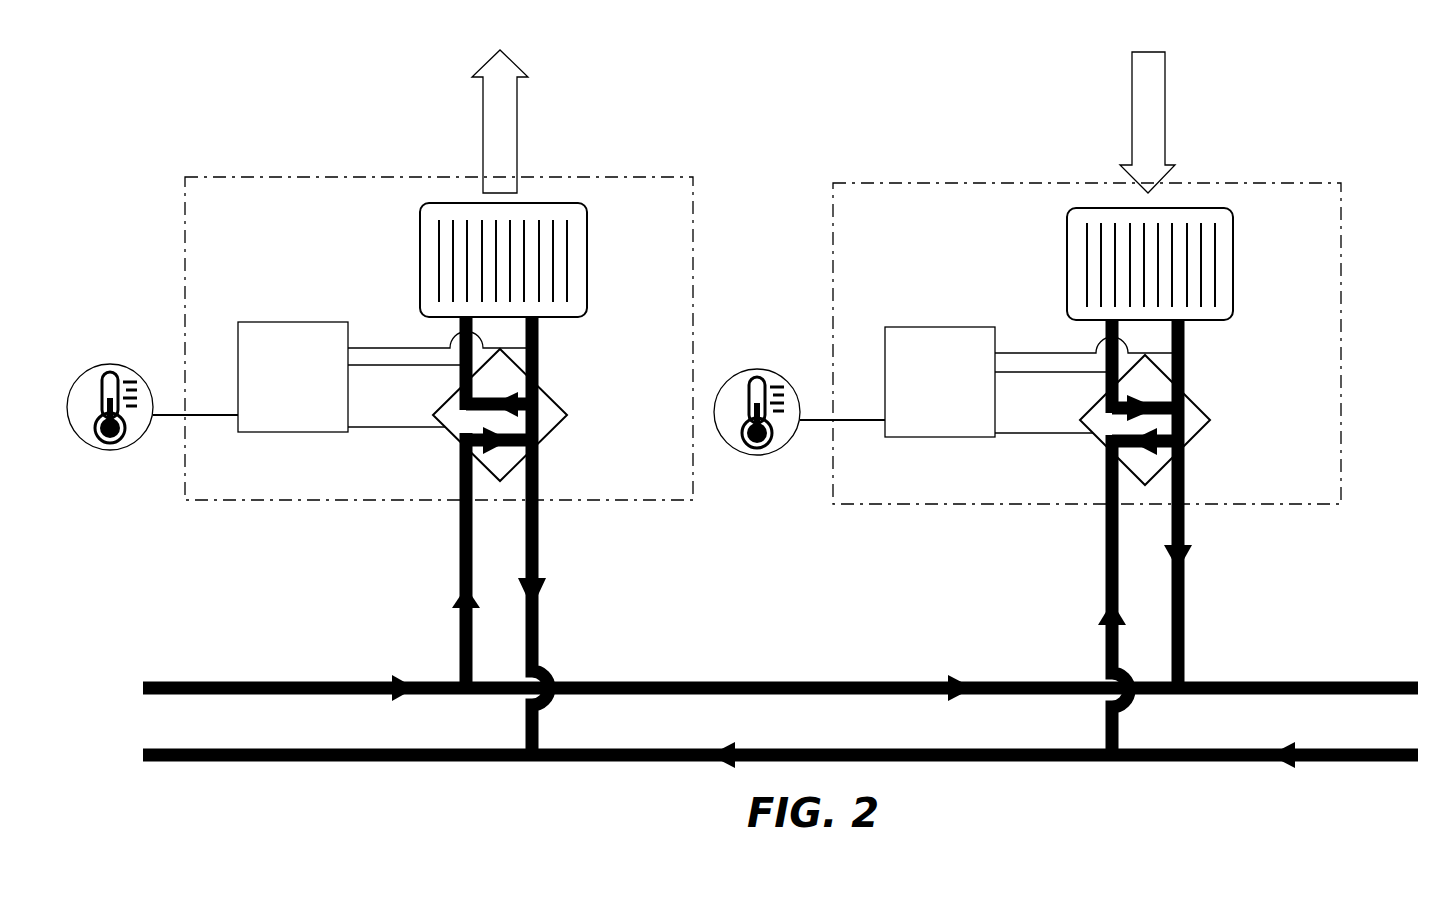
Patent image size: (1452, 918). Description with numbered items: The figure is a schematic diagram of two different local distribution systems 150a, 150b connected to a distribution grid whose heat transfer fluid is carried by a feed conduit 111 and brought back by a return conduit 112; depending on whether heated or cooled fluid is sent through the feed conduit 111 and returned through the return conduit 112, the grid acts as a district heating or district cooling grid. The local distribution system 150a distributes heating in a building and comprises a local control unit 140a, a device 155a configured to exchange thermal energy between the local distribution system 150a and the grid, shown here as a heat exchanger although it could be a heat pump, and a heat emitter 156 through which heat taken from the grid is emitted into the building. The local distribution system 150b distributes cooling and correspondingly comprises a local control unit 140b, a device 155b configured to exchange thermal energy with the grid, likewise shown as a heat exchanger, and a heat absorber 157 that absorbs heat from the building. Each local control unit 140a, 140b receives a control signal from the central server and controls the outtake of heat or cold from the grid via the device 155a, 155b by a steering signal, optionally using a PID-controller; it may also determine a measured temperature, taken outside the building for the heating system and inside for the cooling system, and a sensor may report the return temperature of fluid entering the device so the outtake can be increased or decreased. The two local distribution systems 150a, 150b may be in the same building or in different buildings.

The feed conduit 111 is at (367, 683).
The return conduit 112 is at (620, 748).
The local control unit 140a is at (273, 417).
The local control unit 140b is at (920, 422).
The local distribution system 150a is at (426, 402).
The local distribution system 150b is at (1077, 403).
The device configured to exchange thermal energy 155a is at (555, 412).
The device configured to exchange thermal energy 155b is at (1208, 420).
The heat emitter 156 is at (577, 242).
The heat absorber 157 is at (1223, 247).